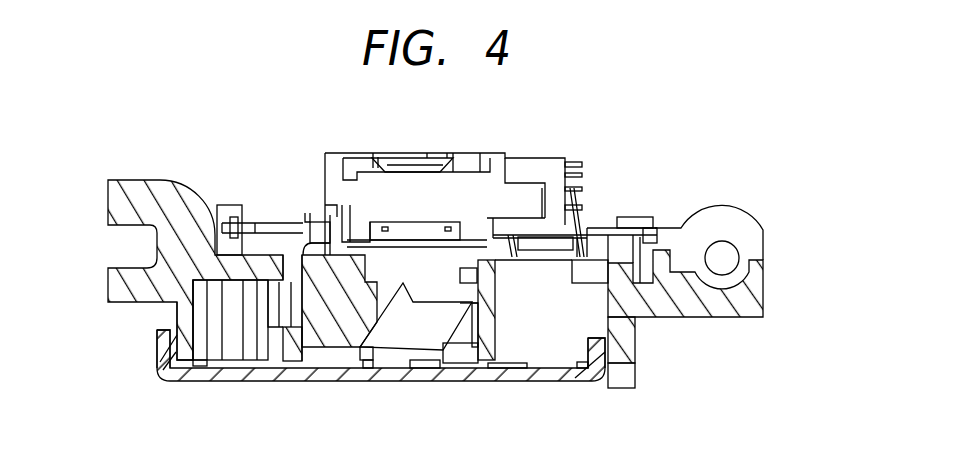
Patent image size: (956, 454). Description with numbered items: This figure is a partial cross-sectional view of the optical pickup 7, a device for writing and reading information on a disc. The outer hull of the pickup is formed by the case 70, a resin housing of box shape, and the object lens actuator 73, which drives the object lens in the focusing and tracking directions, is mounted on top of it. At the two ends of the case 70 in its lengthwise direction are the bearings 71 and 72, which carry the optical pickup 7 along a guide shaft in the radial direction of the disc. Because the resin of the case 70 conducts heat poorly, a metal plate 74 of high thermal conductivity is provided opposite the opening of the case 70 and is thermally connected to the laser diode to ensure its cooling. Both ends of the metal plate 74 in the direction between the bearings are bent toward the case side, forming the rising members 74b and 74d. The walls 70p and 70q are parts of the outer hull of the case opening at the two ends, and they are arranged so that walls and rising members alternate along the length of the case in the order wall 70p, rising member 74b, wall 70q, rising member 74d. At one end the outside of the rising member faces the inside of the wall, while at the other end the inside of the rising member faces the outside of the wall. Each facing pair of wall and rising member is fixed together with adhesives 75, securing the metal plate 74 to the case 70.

The optical pickup 7 is at (740, 117).
The case 70 is at (748, 300).
The wall 70p is at (628, 334).
The wall 70q is at (172, 314).
The bearing 71 is at (736, 236).
The bearing 72 is at (120, 203).
The object lens actuator 73 is at (416, 152).
The metal plate 74 is at (360, 382).
The rising member 74b is at (596, 382).
The rising member 74d is at (164, 342).
The adhesive 75 is at (160, 362).